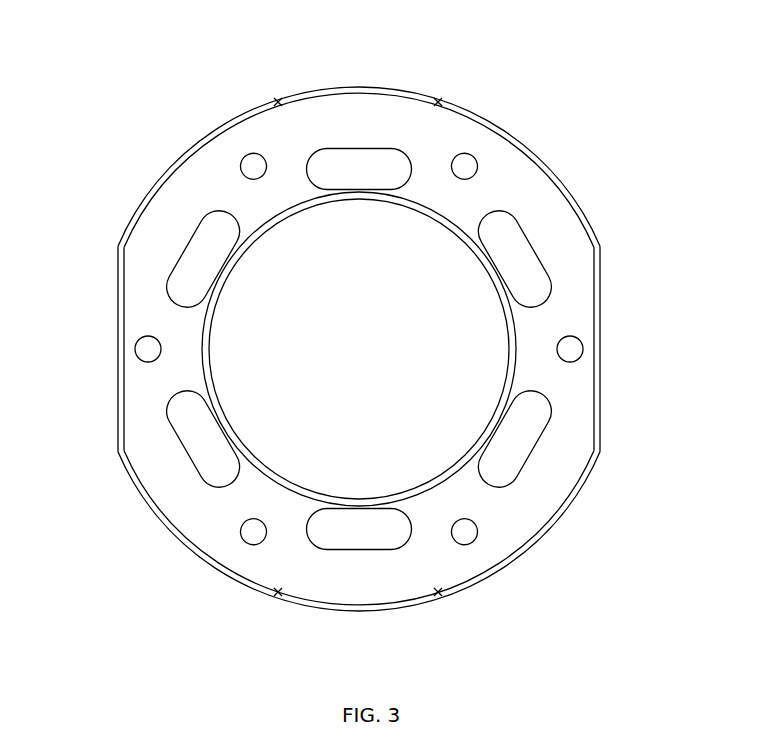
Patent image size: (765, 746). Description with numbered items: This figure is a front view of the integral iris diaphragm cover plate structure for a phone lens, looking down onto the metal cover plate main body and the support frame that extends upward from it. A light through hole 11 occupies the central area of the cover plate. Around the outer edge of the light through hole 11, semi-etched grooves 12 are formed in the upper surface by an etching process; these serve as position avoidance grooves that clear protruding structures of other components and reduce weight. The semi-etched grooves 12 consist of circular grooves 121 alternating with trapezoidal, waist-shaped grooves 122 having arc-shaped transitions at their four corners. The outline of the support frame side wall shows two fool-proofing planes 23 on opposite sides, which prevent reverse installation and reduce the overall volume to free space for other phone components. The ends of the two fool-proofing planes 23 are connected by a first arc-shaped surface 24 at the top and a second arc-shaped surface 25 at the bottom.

The light through hole 11 is at (418, 287).
The semi-etched grooves 12 is at (38, 175).
The circular grooves 121 is at (140, 337).
The trapezoidal grooves 122 is at (198, 263).
The fool-proofing planes 23 is at (597, 362).
The first arc-shaped surface 24 is at (473, 112).
The second arc-shaped surface 25 is at (481, 579).